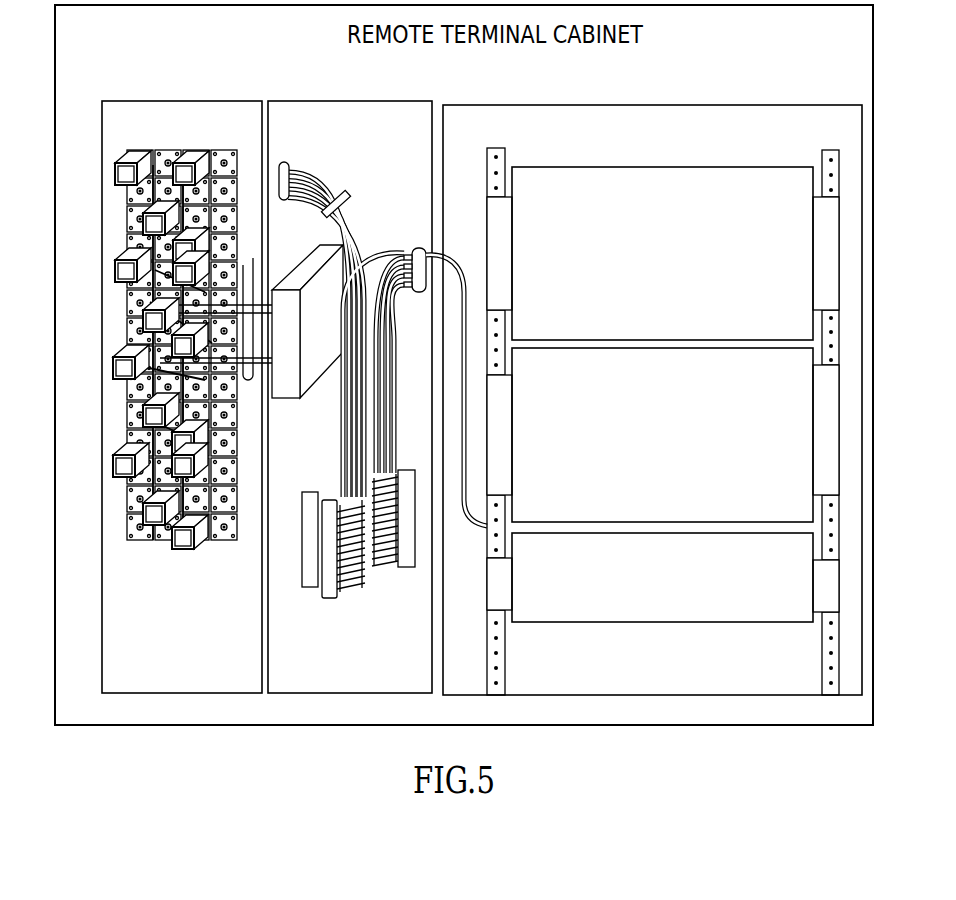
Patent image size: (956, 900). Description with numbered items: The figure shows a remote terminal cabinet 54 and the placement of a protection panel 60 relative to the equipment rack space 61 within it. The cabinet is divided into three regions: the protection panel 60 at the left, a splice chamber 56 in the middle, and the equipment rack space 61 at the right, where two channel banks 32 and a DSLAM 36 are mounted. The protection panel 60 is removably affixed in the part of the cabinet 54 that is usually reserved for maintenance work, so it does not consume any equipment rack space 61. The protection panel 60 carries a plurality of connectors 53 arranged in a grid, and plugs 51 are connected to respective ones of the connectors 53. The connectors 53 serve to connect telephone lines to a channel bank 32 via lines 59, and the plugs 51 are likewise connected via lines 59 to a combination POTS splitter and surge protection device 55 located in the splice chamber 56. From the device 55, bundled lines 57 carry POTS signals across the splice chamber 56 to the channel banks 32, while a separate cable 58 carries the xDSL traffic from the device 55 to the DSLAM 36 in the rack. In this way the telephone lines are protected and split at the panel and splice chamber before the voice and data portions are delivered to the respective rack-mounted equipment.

The channel bank 32 is at (770, 168).
The DSLAM 36 is at (648, 623).
The plugs 51 is at (187, 155).
The connectors 53 is at (124, 233).
The cabinet 54 is at (818, 107).
The combination POTS splitter and surge protection device 55 is at (285, 398).
The splice chamber 56 is at (375, 103).
The lines 57 is at (348, 195).
The cable 58 is at (465, 522).
The lines 59 is at (253, 260).
The protection panel 60 is at (215, 102).
The equipment rack space 61 is at (723, 673).